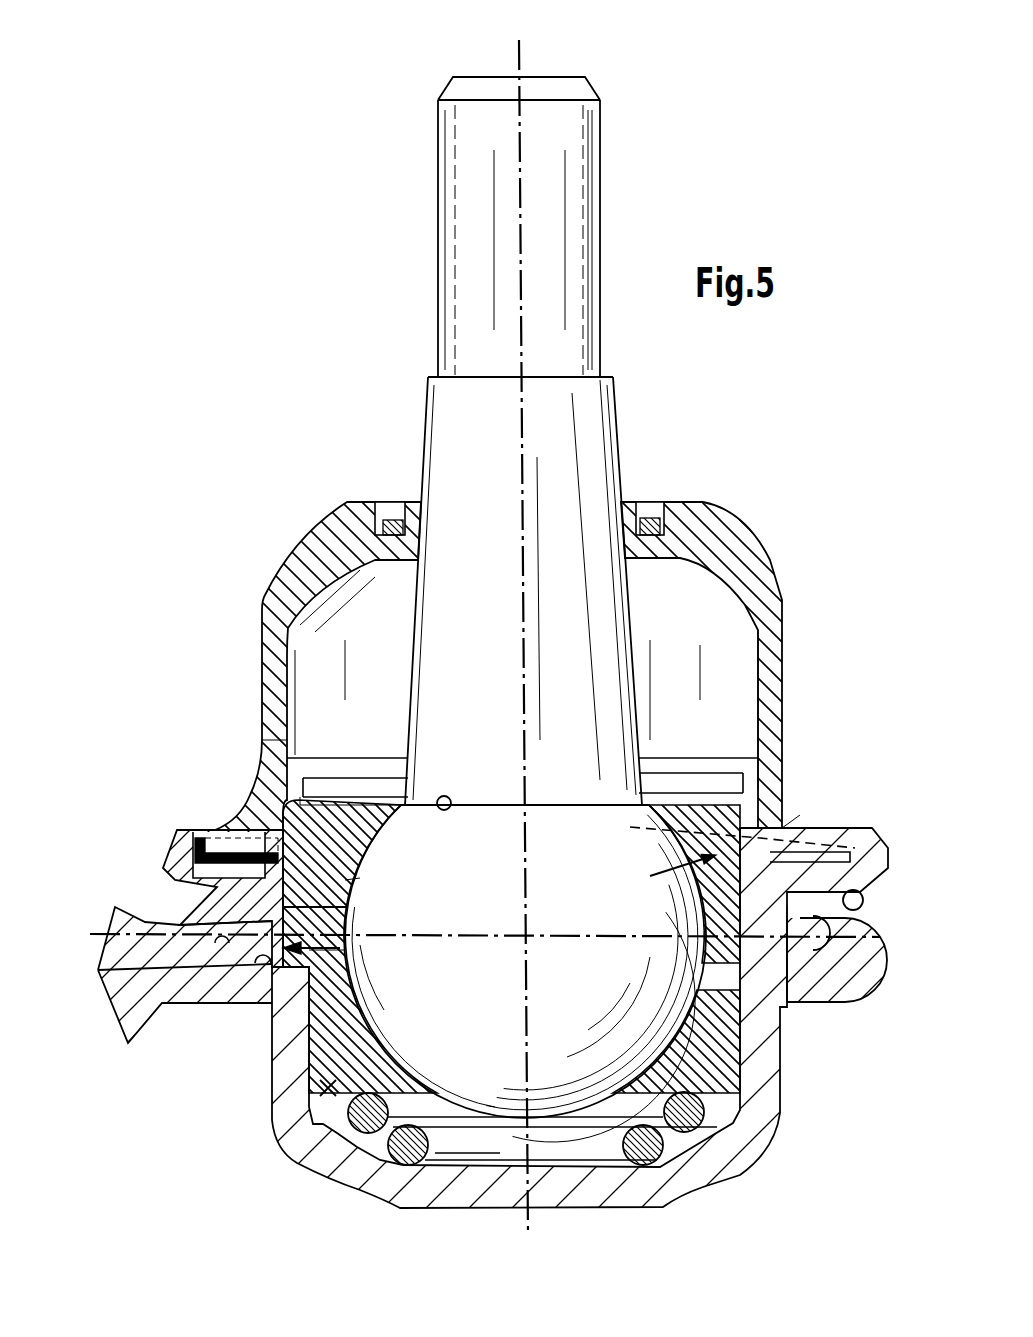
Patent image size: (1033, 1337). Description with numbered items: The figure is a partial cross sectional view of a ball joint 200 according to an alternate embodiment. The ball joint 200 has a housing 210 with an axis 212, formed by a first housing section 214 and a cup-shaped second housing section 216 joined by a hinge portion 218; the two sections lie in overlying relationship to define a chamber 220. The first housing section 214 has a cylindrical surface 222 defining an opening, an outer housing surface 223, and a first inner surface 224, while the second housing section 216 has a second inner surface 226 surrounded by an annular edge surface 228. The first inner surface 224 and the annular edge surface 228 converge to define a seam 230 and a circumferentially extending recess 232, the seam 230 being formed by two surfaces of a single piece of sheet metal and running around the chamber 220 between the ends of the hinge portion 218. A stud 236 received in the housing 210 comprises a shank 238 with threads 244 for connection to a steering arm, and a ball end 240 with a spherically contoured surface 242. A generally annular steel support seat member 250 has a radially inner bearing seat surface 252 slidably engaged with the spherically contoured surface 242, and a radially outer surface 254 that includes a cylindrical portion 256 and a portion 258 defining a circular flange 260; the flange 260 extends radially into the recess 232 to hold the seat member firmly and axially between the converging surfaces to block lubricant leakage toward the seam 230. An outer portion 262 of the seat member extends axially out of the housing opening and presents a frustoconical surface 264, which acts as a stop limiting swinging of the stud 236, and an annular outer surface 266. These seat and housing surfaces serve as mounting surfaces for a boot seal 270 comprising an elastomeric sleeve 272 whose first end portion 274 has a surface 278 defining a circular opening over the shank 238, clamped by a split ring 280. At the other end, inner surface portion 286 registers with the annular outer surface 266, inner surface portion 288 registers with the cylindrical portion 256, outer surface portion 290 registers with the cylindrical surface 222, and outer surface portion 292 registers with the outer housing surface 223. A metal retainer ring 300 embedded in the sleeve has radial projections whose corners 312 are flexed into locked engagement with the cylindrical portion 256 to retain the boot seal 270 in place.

The ball joint 200 is at (191, 487).
The housing 210 is at (795, 1130).
The axis 212 is at (515, 50).
The first housing section 214 is at (128, 923).
The second housing section 216 is at (138, 1000).
The hinge portion 218 is at (857, 953).
The chamber 220 is at (327, 1090).
The cylindrical surface 222 is at (227, 853).
The outer housing surface 223 is at (267, 838).
The first inner surface 224 is at (197, 890).
The second inner surface 226 is at (340, 1133).
The annular edge surface 228 is at (263, 955).
The seam 230 is at (228, 950).
The recess 232 is at (345, 950).
The stud 236 is at (416, 260).
The shank 238 is at (425, 420).
The ball end 240 is at (443, 812).
The spherically contoured surface 242 is at (542, 850).
The threads 244 is at (438, 330).
The support seat member 250 is at (667, 863).
The radially inner bearing seat surface 252 is at (347, 915).
The radially outer surface 254 is at (268, 800).
The cylindrical portion 256 is at (765, 738).
The portion defining circular flange 258 is at (813, 965).
The circular flange 260 is at (787, 947).
The outer portion 262 is at (345, 880).
The frustoconical surface 264 is at (357, 813).
The annular outer surface 266 is at (300, 773).
The boot seal 270 is at (292, 523).
The elastomeric sleeve 272 is at (290, 580).
The first end portion 274 is at (353, 517).
The surface 278 is at (420, 522).
The split ring 280 is at (652, 515).
The portion of inner surface 286 is at (727, 812).
The portion of inner surface 288 is at (707, 890).
The portion of outer surface 290 is at (873, 850).
The portion of outer surface 292 is at (863, 903).
The metal retainer ring 300 is at (800, 815).
The corners 312 is at (722, 831).